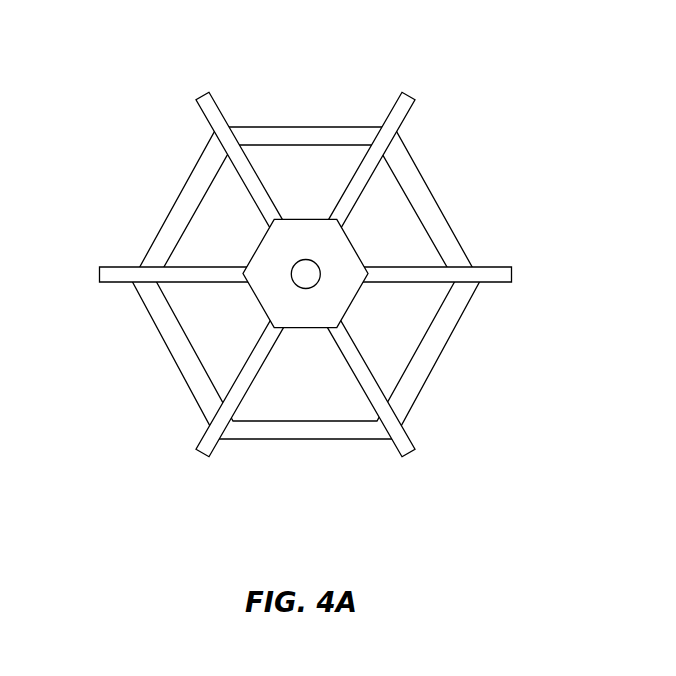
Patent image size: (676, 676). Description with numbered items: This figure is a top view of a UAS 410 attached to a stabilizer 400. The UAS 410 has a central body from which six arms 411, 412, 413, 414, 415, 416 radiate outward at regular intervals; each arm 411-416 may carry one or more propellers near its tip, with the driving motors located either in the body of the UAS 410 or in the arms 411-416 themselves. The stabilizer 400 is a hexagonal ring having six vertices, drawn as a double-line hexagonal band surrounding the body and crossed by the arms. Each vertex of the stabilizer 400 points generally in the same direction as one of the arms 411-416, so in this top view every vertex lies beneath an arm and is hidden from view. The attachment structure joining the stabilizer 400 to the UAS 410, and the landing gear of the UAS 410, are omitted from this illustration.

The stabilizer 400 is at (296, 126).
The UAS 410 is at (257, 243).
The arm 411 is at (412, 98).
The arm 412 is at (510, 269).
The arm 413 is at (408, 449).
The arm 414 is at (209, 452).
The arm 415 is at (106, 268).
The arm 416 is at (197, 97).